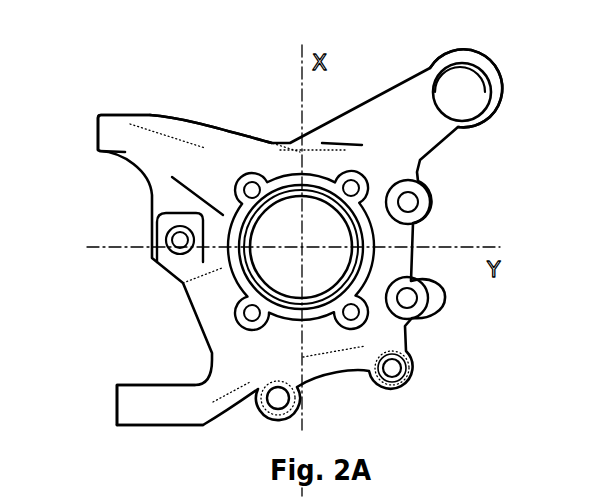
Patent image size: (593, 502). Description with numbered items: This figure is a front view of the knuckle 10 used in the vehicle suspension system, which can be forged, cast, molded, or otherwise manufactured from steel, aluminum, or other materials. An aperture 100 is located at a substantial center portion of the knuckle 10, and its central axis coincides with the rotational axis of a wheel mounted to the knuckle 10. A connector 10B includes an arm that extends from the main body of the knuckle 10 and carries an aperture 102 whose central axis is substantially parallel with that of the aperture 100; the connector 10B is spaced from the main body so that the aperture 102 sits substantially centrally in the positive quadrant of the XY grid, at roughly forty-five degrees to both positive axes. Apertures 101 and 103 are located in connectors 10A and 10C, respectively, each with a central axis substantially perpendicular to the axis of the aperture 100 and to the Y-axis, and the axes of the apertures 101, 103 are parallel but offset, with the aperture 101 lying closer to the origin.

The knuckle 10 is at (225, 89).
The connector 10A is at (143, 137).
The connector 10B is at (480, 62).
The connector 10C is at (157, 428).
The aperture 100 is at (362, 249).
The aperture 101 is at (110, 152).
The aperture 102 is at (451, 58).
The aperture 103 is at (143, 384).